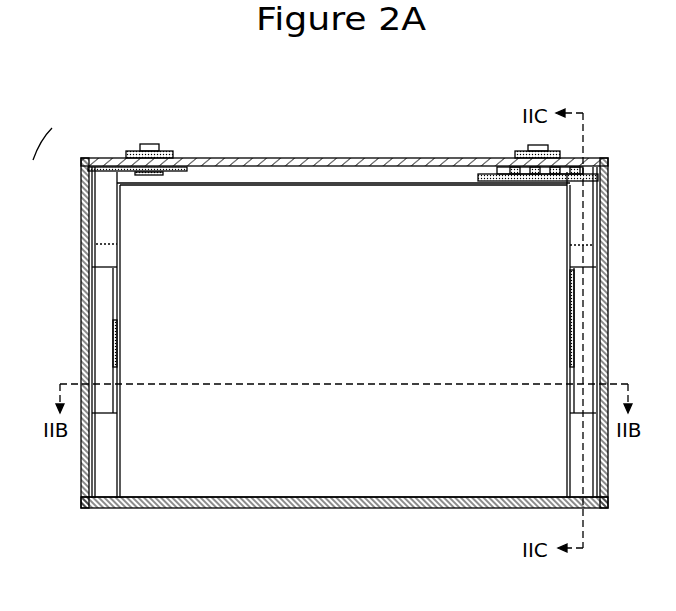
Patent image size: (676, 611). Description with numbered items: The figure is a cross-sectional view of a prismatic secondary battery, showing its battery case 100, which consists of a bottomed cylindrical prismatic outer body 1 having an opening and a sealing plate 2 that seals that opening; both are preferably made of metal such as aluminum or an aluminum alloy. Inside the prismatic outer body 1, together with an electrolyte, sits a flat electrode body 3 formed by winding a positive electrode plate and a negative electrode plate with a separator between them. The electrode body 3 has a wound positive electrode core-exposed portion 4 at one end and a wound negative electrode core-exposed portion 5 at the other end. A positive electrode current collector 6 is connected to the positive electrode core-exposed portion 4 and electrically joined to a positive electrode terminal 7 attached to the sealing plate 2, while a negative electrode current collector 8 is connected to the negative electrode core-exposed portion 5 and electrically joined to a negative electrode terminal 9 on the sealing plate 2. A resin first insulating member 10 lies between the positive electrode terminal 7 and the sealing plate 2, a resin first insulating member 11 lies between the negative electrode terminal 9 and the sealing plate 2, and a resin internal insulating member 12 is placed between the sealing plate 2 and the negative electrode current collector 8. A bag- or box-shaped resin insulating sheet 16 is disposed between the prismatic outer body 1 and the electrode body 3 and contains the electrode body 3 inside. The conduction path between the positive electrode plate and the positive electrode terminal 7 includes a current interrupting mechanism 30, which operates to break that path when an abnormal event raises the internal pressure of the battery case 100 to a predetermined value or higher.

The battery case 100 is at (88, 106).
The prismatic outer body 1 is at (83, 186).
The sealing plate 2 is at (112, 160).
The electrode body 3 is at (361, 465).
The positive electrode core-exposed portion 4 is at (588, 470).
The negative electrode core-exposed portion 5 is at (102, 477).
The positive electrode current collector 6 is at (588, 230).
The positive electrode terminal 7 is at (528, 146).
The negative electrode current collector 8 is at (98, 282).
The negative electrode terminal 9 is at (148, 143).
The first insulating member 10 is at (515, 158).
The first insulating member 11 is at (172, 152).
The internal insulating member 12 is at (182, 172).
The insulating sheet 16 is at (428, 506).
The current interrupting mechanism 30 is at (530, 176).